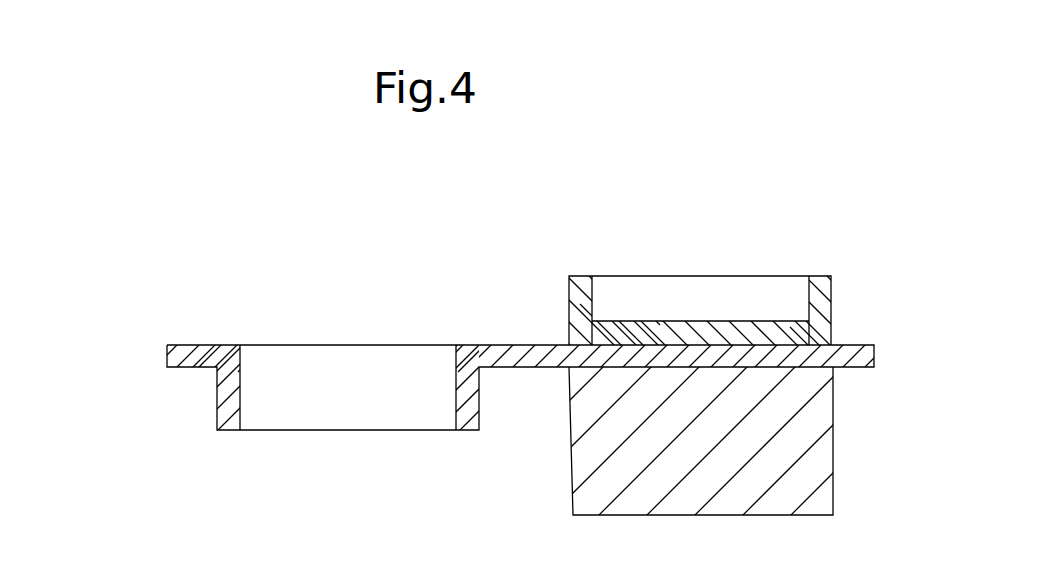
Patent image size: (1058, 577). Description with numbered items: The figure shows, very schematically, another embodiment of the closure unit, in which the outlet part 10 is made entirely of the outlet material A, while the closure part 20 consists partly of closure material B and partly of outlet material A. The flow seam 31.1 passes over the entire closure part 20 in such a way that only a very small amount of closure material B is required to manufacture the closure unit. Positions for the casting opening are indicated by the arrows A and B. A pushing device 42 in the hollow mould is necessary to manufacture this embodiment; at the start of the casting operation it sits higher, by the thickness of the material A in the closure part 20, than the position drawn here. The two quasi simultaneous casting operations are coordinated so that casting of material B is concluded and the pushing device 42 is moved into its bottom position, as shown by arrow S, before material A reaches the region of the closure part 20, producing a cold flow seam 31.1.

The outlet part 10 is at (338, 327).
The closure part 20 is at (693, 273).
The flow seam 31.1 is at (832, 344).
The pushing device 42 is at (820, 452).
The outlet material A is at (153, 352).
The closure material B is at (711, 302).
The arrow S is at (703, 392).